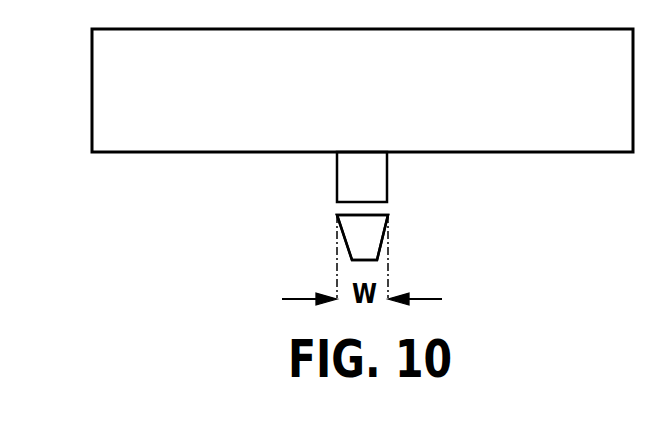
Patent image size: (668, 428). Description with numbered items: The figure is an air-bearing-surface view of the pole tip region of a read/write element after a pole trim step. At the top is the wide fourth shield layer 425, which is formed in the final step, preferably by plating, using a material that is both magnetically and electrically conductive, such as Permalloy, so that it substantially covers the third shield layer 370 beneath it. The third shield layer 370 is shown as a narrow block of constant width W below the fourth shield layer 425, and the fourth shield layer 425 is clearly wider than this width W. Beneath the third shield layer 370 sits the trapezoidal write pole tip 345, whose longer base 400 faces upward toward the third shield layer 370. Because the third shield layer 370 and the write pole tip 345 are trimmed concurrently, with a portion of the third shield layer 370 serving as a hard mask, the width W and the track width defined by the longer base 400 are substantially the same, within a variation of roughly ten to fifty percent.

The S4 layer 425 is at (410, 102).
The S3 layer 370 is at (337, 174).
The longer base of the write pole tip 400 is at (389, 214).
The write pole tip 345 is at (365, 230).